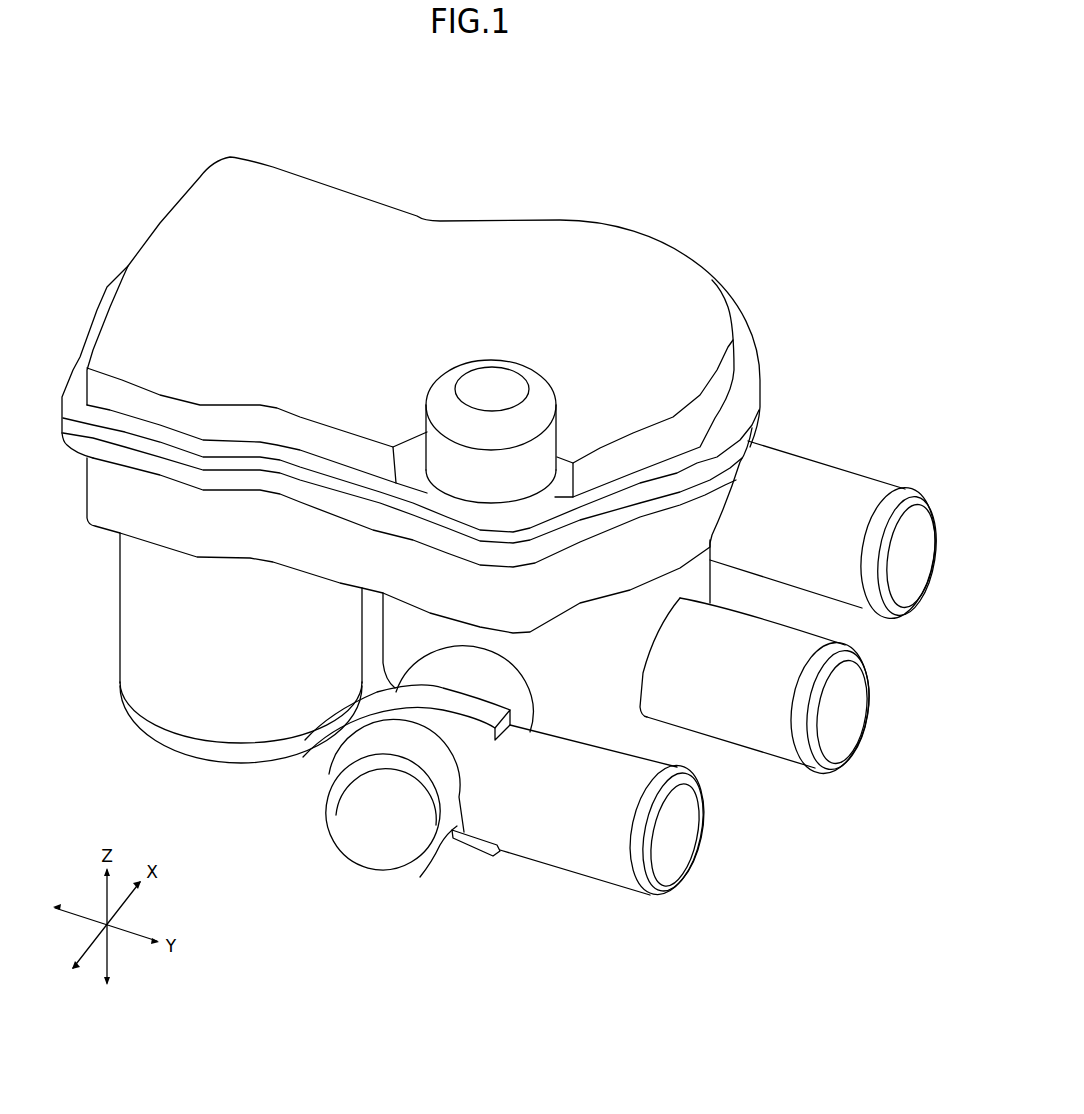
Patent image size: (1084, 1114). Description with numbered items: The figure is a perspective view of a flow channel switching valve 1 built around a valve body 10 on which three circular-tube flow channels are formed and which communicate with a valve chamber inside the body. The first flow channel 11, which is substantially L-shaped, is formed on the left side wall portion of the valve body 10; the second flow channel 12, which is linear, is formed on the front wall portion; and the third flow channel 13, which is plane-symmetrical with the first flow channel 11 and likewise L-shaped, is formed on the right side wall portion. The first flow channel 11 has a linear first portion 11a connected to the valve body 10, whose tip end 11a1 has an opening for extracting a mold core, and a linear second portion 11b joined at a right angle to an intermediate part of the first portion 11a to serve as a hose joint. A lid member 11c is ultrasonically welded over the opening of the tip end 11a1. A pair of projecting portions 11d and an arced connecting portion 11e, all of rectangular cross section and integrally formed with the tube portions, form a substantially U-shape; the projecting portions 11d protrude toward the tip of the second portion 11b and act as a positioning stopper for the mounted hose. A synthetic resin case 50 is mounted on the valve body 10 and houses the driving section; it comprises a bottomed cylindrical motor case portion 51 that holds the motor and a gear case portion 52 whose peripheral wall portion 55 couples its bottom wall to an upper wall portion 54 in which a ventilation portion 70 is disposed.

The flow channel switching valve 1 is at (232, 118).
The valve body 10 is at (690, 583).
The first flow channel 11 is at (617, 885).
The first portion 11a is at (520, 677).
The tip end 11a1 is at (443, 847).
The second portion 11b is at (553, 860).
The lid member 11c is at (370, 847).
The projecting portions 11d is at (463, 727).
The connecting portion 11e is at (372, 697).
The second flow channel 12 is at (793, 762).
The third flow channel 13 is at (867, 478).
The case 50 is at (523, 216).
The motor case portion 51 is at (160, 743).
The gear case portion 52 is at (605, 228).
The upper wall portion 54 is at (668, 283).
The peripheral wall portion 55 is at (693, 520).
The ventilation portion 70 is at (453, 378).